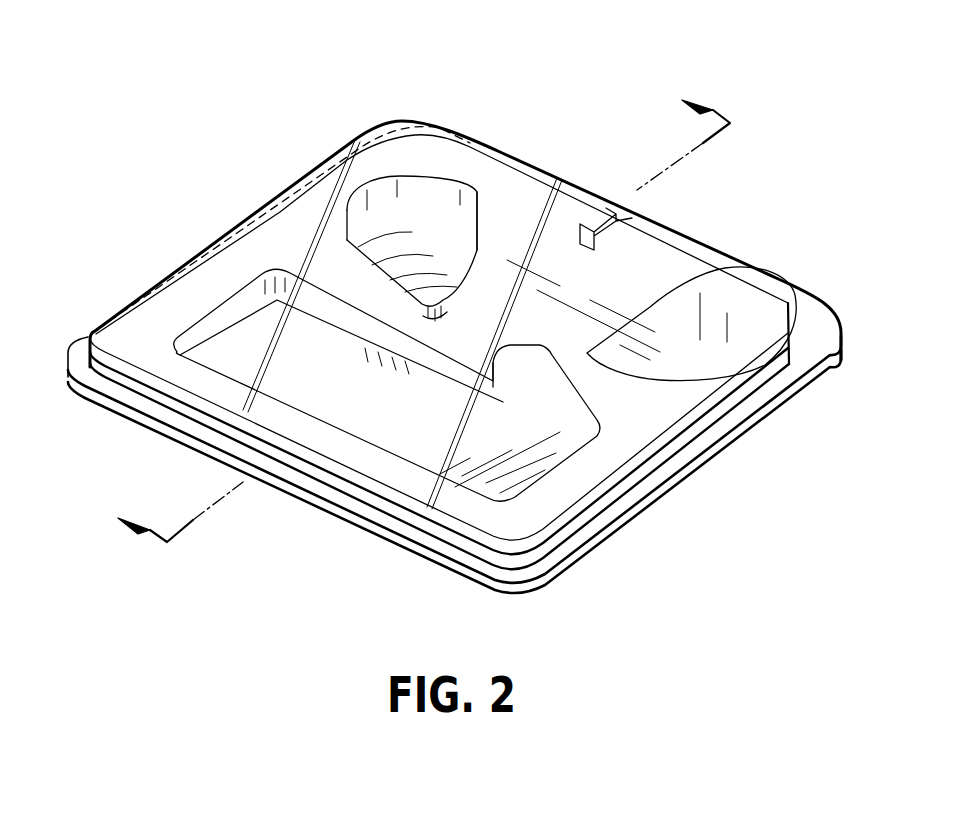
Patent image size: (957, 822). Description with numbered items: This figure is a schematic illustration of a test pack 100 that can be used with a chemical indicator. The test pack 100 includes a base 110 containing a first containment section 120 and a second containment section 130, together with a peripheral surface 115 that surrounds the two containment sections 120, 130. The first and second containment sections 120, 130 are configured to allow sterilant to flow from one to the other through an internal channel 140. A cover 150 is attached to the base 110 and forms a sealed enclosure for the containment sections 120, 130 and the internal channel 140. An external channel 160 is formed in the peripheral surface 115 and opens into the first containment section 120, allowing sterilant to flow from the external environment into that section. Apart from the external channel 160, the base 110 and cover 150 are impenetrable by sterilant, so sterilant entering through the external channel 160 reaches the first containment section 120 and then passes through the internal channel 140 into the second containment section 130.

The test pack 100 is at (522, 102).
The base 110 is at (762, 316).
The peripheral surface 115 is at (625, 437).
The first containment section 120 is at (650, 305).
The second containment section 130 is at (345, 403).
The internal channel 140 is at (455, 348).
The cover 150 is at (307, 210).
The external channel 160 is at (600, 227).